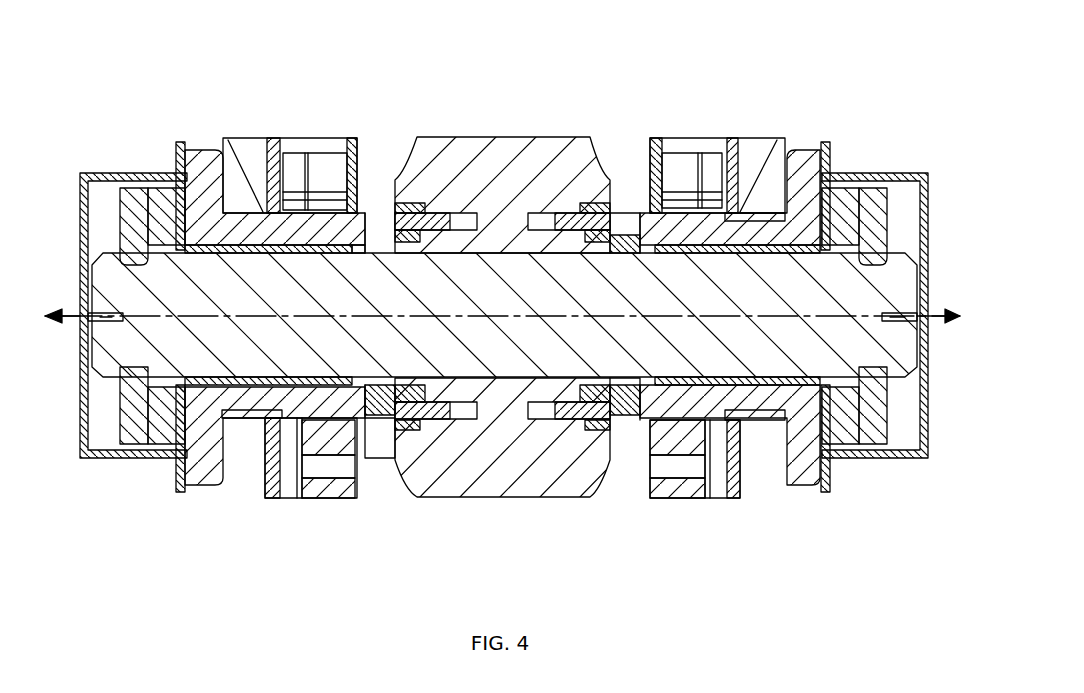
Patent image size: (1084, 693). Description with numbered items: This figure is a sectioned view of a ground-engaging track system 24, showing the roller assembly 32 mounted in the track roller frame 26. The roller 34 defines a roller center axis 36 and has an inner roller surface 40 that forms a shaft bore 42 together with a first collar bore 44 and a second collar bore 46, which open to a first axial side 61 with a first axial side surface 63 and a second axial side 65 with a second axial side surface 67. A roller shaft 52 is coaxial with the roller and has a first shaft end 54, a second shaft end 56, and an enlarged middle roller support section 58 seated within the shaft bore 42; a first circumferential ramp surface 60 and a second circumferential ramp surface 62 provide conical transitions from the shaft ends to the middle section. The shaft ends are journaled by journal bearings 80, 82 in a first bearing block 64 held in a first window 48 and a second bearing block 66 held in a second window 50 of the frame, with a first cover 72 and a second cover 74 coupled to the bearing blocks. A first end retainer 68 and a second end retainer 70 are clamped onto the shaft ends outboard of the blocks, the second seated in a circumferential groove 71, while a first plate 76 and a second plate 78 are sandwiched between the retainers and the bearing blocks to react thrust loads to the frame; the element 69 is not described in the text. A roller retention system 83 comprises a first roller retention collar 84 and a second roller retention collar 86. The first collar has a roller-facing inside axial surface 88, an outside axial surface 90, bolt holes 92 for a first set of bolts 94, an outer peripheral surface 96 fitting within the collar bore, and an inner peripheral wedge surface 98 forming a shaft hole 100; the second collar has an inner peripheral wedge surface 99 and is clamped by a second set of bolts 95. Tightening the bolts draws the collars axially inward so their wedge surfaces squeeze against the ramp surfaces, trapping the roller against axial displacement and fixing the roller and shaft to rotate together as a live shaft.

The ground-engaging track system 24 is at (767, 83).
The track roller frame 26 is at (328, 500).
The roller assembly 32 is at (606, 135).
The roller 34 is at (456, 140).
The roller center axis 36 is at (76, 310).
The inner roller surface 40 is at (478, 257).
The shaft bore 42 is at (520, 258).
The first collar bore 44 is at (432, 208).
The second collar bore 46 is at (605, 205).
The first window 48 is at (265, 437).
The second window 50 is at (658, 432).
The roller shaft 52 is at (668, 386).
The first shaft end 54 is at (222, 266).
The second shaft end 56 is at (765, 393).
The middle roller support section 58 is at (497, 390).
The first circumferential ramp surface 60 is at (394, 400).
The first axial side 61 is at (393, 490).
The second circumferential ramp surface 62 is at (616, 248).
The first axial side surface 63 is at (392, 445).
The first bearing block 64 is at (338, 212).
The second axial side 65 is at (622, 448).
The second bearing block 66 is at (668, 218).
The second axial side surface 67 is at (612, 383).
The first end retainer 68 is at (128, 455).
The left inner block 69 is at (124, 385).
The second end retainer 70 is at (878, 200).
The circumferential groove 71 is at (880, 380).
The first cover 72 is at (116, 174).
The second cover 74 is at (924, 174).
The first plate 76 is at (178, 455).
The second plate 78 is at (838, 195).
The journal bearings 80 is at (270, 240).
The journal bearings 82 is at (754, 421).
The roller retention system 83 is at (386, 196).
The first roller retention collar 84 is at (402, 204).
The second roller retention collar 86 is at (592, 472).
The roller-facing inside axial surface 88 is at (418, 385).
The outside axial surface 90 is at (392, 385).
The bolt holes 92 is at (440, 228).
The first set of bolts 94 is at (422, 243).
The second set of bolts 95 is at (566, 213).
The outer peripheral surface 96 is at (412, 472).
The inner peripheral wedge surface 98 is at (402, 260).
The inner peripheral wedge surface 99 is at (582, 385).
The shaft hole 100 is at (392, 262).